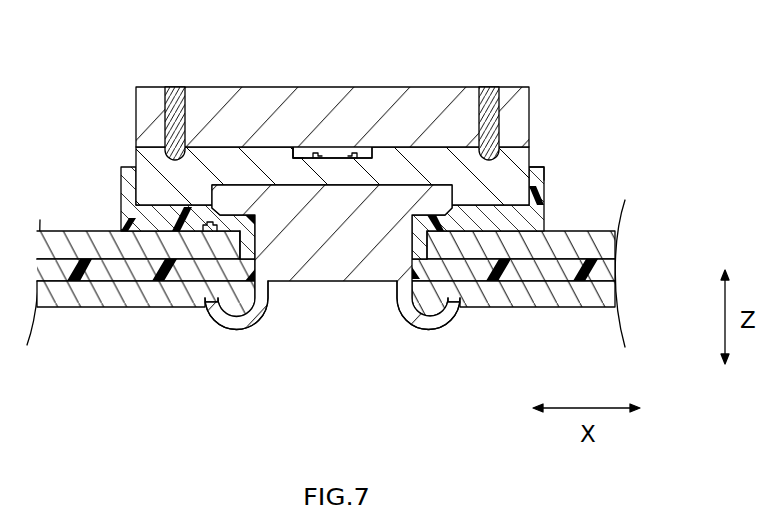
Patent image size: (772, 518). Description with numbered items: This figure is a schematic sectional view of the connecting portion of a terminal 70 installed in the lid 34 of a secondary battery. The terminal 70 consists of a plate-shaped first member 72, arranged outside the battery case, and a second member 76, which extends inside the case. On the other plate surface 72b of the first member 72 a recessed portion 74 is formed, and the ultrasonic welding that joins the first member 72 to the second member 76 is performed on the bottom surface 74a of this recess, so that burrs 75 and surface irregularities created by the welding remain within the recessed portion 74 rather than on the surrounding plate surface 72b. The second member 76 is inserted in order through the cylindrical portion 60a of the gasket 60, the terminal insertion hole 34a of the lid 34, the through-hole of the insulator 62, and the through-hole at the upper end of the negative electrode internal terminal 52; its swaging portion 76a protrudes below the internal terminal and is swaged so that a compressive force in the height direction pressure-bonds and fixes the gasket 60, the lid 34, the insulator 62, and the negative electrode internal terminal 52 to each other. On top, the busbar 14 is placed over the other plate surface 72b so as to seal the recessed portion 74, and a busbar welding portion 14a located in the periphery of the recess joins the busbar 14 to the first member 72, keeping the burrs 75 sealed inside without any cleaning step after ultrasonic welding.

The busbar 14 is at (437, 88).
The busbar welding portion 14a is at (500, 145).
The terminal 70 is at (135, 150).
The first member 72 is at (529, 157).
The other plate surface 72b is at (510, 143).
The recessed portion 74 is at (328, 148).
The bottom surface 74a is at (298, 165).
The burrs 75 is at (357, 152).
The second member 76 is at (380, 218).
The swaging portion 76a is at (405, 322).
The gasket 60 is at (120, 170).
The cylindrical portion 60a is at (238, 248).
The lid 34 is at (610, 243).
The terminal insertion hole 34a is at (412, 240).
The insulator 62 is at (610, 272).
The negative electrode internal terminal 52 is at (608, 297).